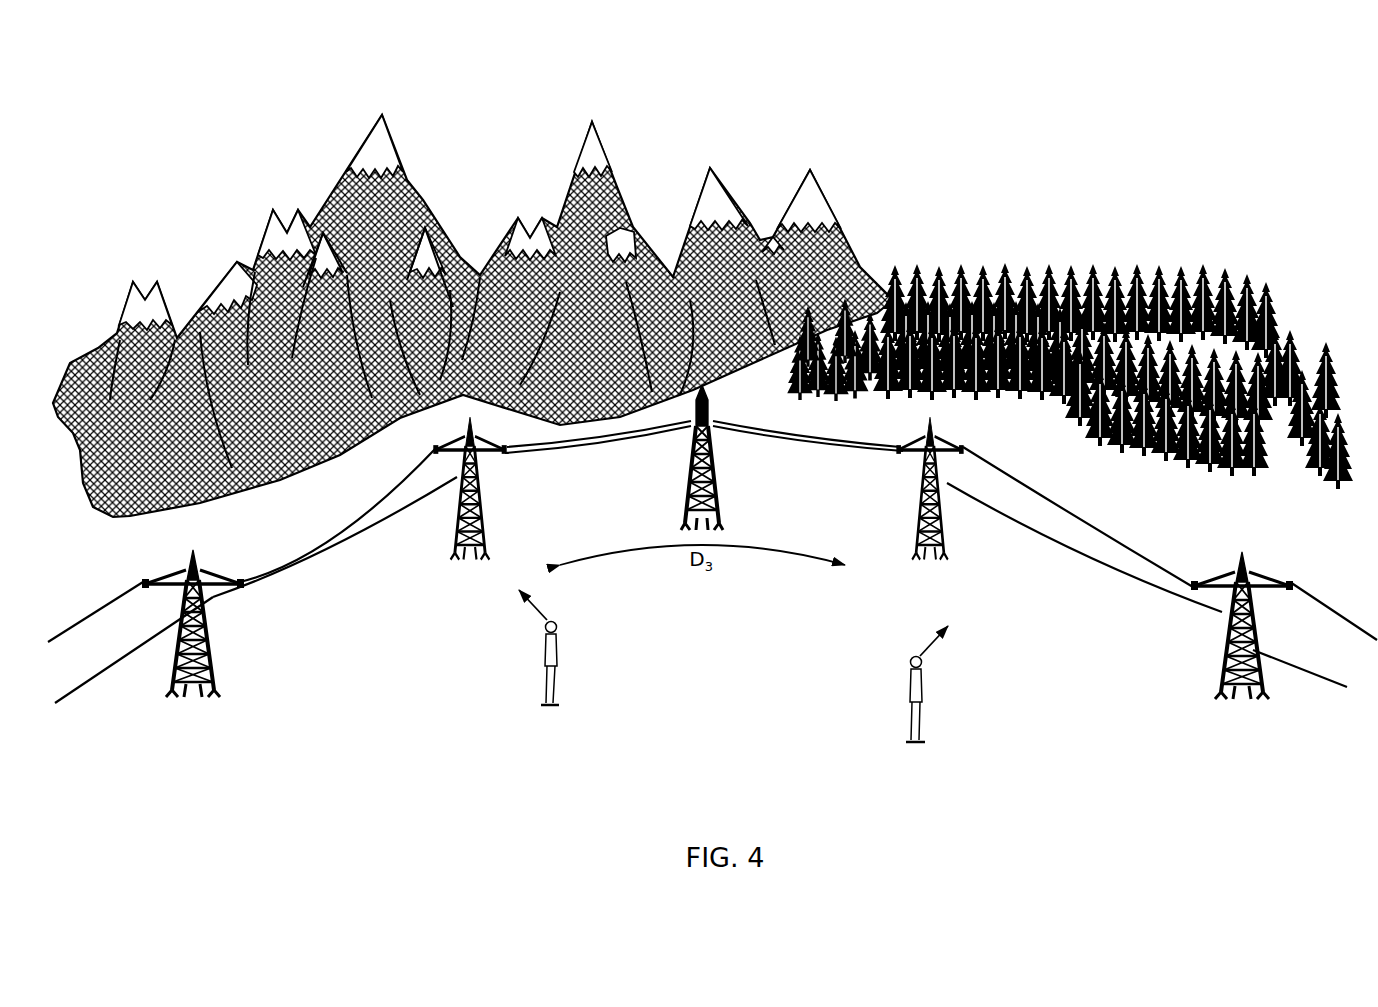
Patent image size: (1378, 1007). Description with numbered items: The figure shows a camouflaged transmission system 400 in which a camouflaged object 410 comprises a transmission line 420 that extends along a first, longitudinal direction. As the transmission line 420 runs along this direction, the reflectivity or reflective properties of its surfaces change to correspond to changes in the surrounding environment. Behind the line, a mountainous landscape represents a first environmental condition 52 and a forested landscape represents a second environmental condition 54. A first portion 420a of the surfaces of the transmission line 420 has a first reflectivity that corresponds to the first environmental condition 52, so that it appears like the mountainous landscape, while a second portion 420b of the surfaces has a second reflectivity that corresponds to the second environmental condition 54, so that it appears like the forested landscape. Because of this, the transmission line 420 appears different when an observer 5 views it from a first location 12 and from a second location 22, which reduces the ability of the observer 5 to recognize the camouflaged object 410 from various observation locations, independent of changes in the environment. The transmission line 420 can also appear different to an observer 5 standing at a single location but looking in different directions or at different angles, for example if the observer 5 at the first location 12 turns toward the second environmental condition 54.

The camouflaged transmission system 400 is at (869, 116).
The first environmental condition 52 is at (655, 163).
The second environmental condition 54 is at (1136, 238).
The camouflaged object 410 is at (1296, 561).
The transmission line 420 is at (303, 563).
The first portion 420a is at (387, 528).
The second portion 420b is at (1110, 565).
The observer 5 is at (558, 636).
The first location 12 is at (565, 712).
The second location 22 is at (900, 751).